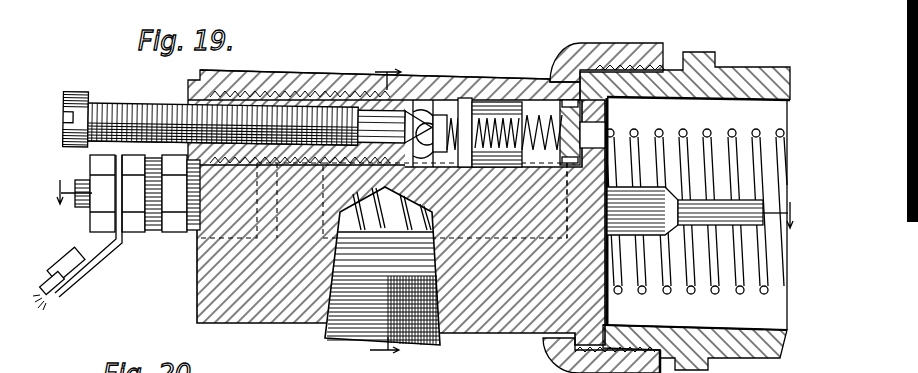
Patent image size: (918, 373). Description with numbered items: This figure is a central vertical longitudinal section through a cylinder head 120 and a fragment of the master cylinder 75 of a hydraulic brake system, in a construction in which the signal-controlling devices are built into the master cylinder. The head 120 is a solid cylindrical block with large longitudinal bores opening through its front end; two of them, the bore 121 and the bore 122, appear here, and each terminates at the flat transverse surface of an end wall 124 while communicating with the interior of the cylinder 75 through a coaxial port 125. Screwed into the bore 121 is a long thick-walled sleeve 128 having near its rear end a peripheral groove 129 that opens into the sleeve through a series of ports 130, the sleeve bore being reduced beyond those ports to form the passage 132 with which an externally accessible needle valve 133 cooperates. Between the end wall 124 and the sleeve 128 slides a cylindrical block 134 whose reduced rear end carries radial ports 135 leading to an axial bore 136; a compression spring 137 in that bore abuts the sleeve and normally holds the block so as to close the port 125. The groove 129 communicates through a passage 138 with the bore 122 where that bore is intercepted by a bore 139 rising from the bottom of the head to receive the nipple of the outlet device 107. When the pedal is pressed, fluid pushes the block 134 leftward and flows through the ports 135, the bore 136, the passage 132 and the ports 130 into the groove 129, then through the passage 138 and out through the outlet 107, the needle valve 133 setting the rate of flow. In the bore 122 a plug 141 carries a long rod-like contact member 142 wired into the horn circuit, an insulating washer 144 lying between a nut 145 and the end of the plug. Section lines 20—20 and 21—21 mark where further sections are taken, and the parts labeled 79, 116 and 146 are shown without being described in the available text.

The needle valve 133 is at (178, 108).
The cylinder head 120 is at (285, 62).
The longitudinal bore 121 is at (292, 82).
The sleeve 128 is at (320, 96).
The section line 21— 21 is at (384, 212).
The ports 130 is at (417, 100).
The peripheral groove 129 is at (448, 97).
The compression spring 137 is at (478, 97).
The sliding cylindrical block 134 is at (496, 101).
The radial ports 135 is at (548, 103).
The nut 79 is at (600, 43).
The cylinder 75 is at (762, 70).
The port 125 is at (605, 140).
The end wall 124 is at (636, 141).
The section line 20— 20 is at (425, 204).
The contact member 142 is at (78, 206).
The nut 145 is at (130, 229).
The insulating washer 144 is at (152, 233).
The plug 141 is at (175, 233).
The tube 116 is at (50, 300).
The longitudinal bore 122 is at (447, 229).
The passage 146 is at (318, 231).
The passage 138 is at (412, 167).
The reduced passage 132 is at (445, 200).
The axial bore 136 is at (531, 153).
The outlet bore 139 is at (505, 285).
The outlet device 107 is at (442, 342).